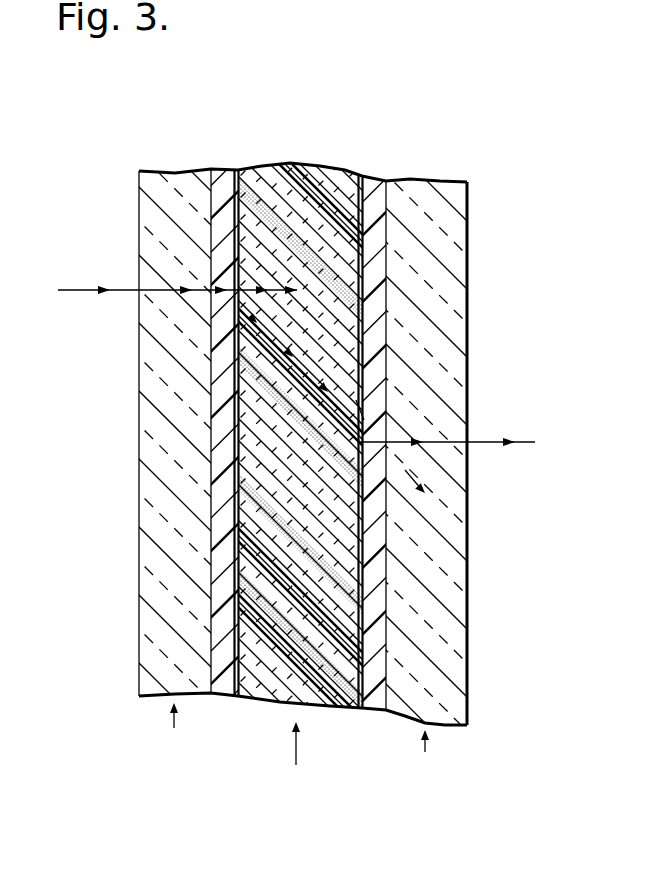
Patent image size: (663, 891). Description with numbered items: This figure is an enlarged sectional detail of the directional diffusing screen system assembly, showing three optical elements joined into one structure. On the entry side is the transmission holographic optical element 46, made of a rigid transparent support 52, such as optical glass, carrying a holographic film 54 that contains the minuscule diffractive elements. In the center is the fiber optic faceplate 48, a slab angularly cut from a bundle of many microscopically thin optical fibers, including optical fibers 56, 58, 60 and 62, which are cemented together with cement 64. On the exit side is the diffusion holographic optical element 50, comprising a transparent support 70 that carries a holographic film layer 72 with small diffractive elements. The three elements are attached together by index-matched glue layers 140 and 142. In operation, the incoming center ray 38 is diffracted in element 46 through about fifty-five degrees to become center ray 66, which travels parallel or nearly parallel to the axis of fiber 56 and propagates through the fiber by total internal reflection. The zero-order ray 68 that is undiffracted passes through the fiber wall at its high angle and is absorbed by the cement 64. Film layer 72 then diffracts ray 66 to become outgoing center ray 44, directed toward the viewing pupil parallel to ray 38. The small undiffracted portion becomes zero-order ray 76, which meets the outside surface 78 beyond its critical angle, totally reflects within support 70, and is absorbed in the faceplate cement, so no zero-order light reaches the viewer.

The incoming center ray 38 is at (80, 290).
The center ray 44 is at (478, 442).
The transmission holographic optical element 46 is at (171, 729).
The fiber optic faceplate 48 is at (297, 756).
The diffusion holographic optical element 50 is at (427, 756).
The support 52 is at (142, 665).
The holographic film 54 is at (223, 613).
The optical fiber 56 is at (240, 315).
The optical fiber 58 is at (243, 442).
The optical fiber 60 is at (240, 593).
The optical fiber 62 is at (243, 510).
The cement 64 is at (283, 704).
The center ray 66 is at (357, 410).
The zero-order ray 68 is at (294, 290).
The support 70 is at (468, 602).
The holographic film layer 72 is at (376, 705).
The zero-order ray 76 is at (430, 497).
The outside surface 78 is at (468, 720).
The glue layer 140 is at (237, 700).
The glue layer 142 is at (358, 711).